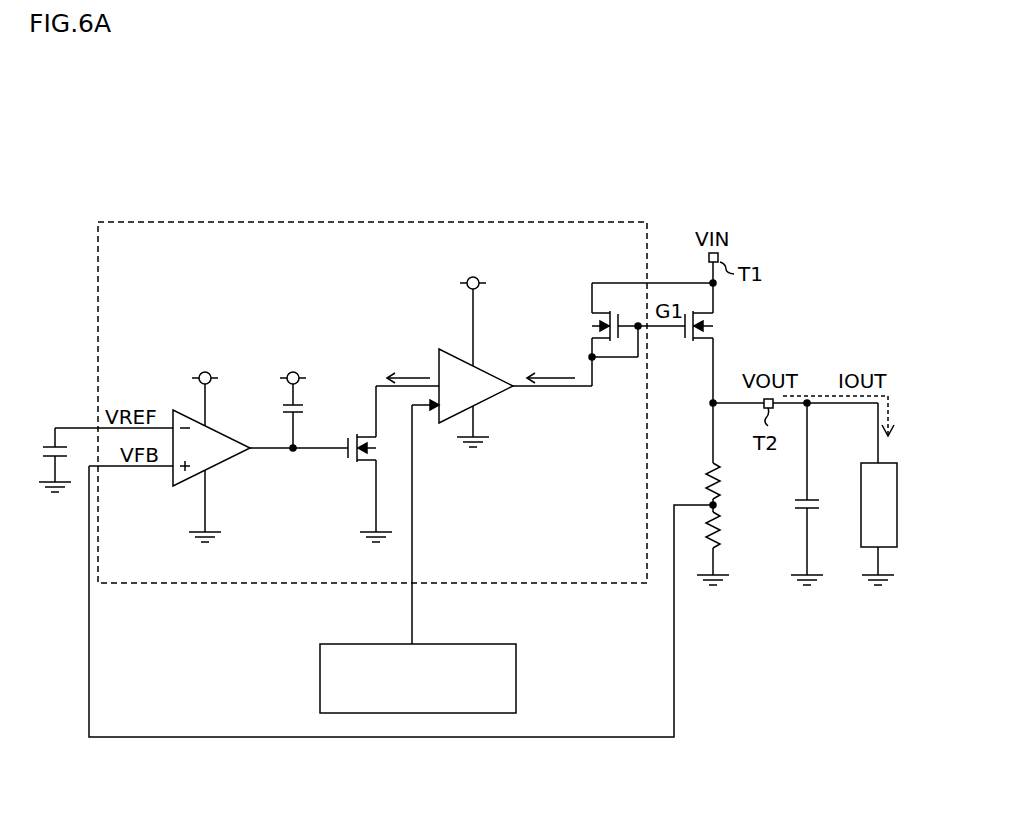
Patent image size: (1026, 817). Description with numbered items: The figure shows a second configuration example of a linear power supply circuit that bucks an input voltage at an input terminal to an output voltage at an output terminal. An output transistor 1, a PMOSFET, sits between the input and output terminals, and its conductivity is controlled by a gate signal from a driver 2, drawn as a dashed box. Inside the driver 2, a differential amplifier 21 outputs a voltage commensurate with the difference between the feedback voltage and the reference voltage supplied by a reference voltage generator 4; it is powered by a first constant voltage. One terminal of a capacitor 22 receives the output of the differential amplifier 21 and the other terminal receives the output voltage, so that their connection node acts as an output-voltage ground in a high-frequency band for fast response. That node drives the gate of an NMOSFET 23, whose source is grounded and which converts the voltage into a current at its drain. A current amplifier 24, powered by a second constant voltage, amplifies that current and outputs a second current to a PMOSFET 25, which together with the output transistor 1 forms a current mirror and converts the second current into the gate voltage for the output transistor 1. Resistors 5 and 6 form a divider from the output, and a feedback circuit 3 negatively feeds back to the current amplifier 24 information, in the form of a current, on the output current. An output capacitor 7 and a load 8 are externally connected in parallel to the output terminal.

The output transistor 1 is at (717, 322).
The driver 2 is at (397, 222).
The feedback circuit 3 is at (506, 644).
The reference voltage generator 4 is at (40, 455).
The resistor 5 is at (722, 479).
The resistor 6 is at (722, 534).
The output capacitor 7 is at (822, 500).
The load 8 is at (899, 502).
The differential amplifier 21 is at (215, 436).
The capacitor 22 is at (305, 411).
The NMOSFET 23 is at (347, 460).
The current amplifier 24 is at (484, 376).
The PMOSFET 25 is at (586, 326).